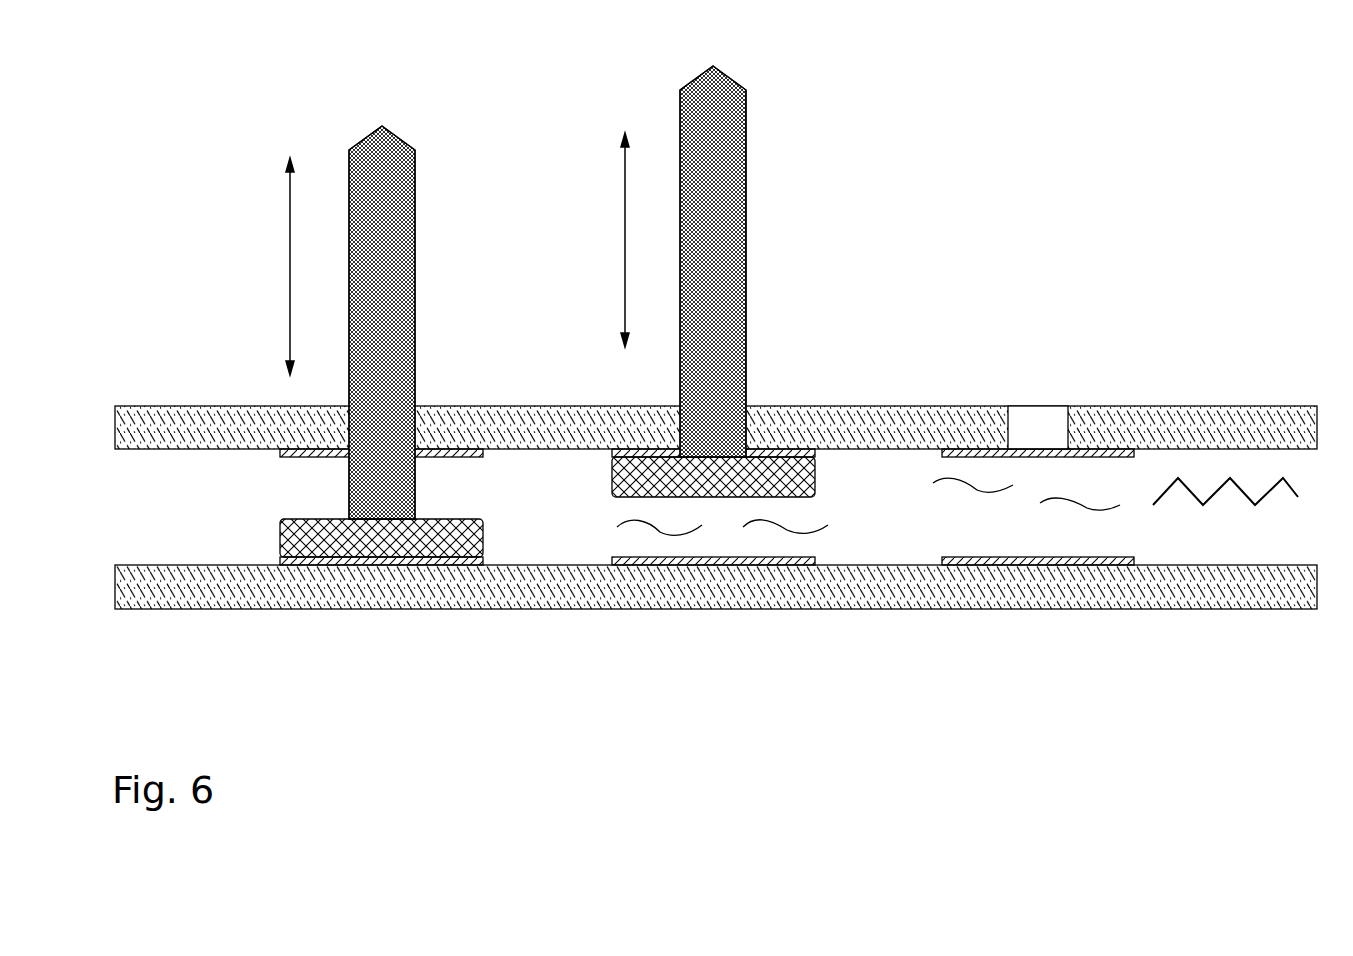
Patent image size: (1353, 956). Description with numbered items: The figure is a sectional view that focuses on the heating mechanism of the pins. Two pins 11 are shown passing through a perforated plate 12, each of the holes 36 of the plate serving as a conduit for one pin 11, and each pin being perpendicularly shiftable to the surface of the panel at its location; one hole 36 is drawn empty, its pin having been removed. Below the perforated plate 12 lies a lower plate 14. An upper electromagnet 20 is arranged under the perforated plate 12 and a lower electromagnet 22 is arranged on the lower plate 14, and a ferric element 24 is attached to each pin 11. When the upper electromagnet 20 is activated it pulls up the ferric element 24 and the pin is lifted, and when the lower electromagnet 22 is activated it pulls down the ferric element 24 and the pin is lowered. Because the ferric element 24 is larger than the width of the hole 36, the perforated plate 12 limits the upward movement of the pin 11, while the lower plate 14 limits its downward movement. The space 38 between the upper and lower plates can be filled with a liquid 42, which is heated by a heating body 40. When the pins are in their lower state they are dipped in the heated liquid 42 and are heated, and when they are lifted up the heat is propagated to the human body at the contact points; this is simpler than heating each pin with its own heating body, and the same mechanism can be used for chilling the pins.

The pin 11 is at (404, 328).
The perforated plate 12 is at (178, 425).
The lower plate 14 is at (172, 587).
The upper electromagnet 20 is at (292, 453).
The lower electromagnet 22 is at (280, 562).
The ferric element 24 is at (472, 533).
The hole 36 is at (1038, 417).
The space 38 is at (893, 519).
The heating body 40 is at (1265, 488).
The liquid 42 is at (1097, 510).